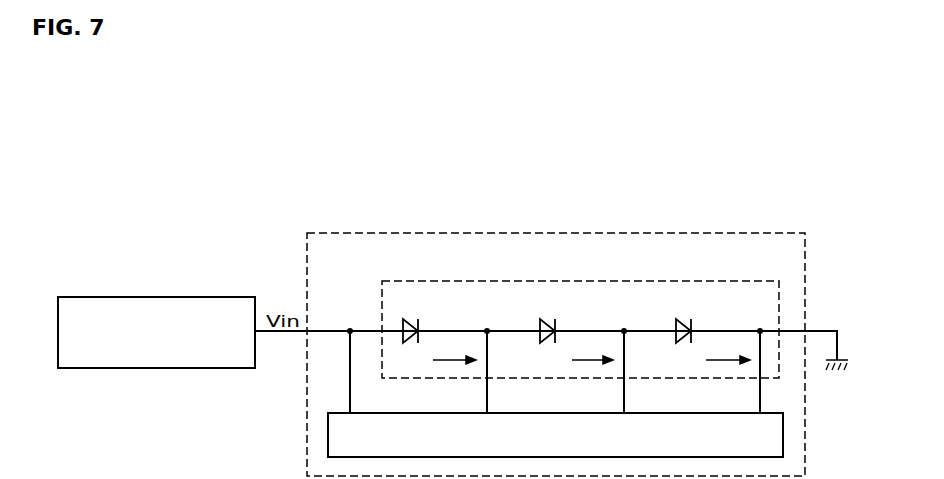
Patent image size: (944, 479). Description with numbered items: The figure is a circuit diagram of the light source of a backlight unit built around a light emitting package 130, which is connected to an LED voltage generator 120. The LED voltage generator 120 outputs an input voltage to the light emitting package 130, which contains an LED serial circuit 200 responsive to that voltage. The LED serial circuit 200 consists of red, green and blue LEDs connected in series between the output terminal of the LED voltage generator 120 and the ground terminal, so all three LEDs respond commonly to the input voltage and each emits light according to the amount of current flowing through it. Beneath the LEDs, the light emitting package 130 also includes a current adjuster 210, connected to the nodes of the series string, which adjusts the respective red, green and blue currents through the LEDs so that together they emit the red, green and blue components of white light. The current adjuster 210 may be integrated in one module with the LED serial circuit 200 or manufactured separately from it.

The LED voltage generator 120 is at (157, 297).
The light emitting package 130 is at (722, 233).
The LED serial circuit 200 is at (470, 281).
The current adjuster 210 is at (783, 430).